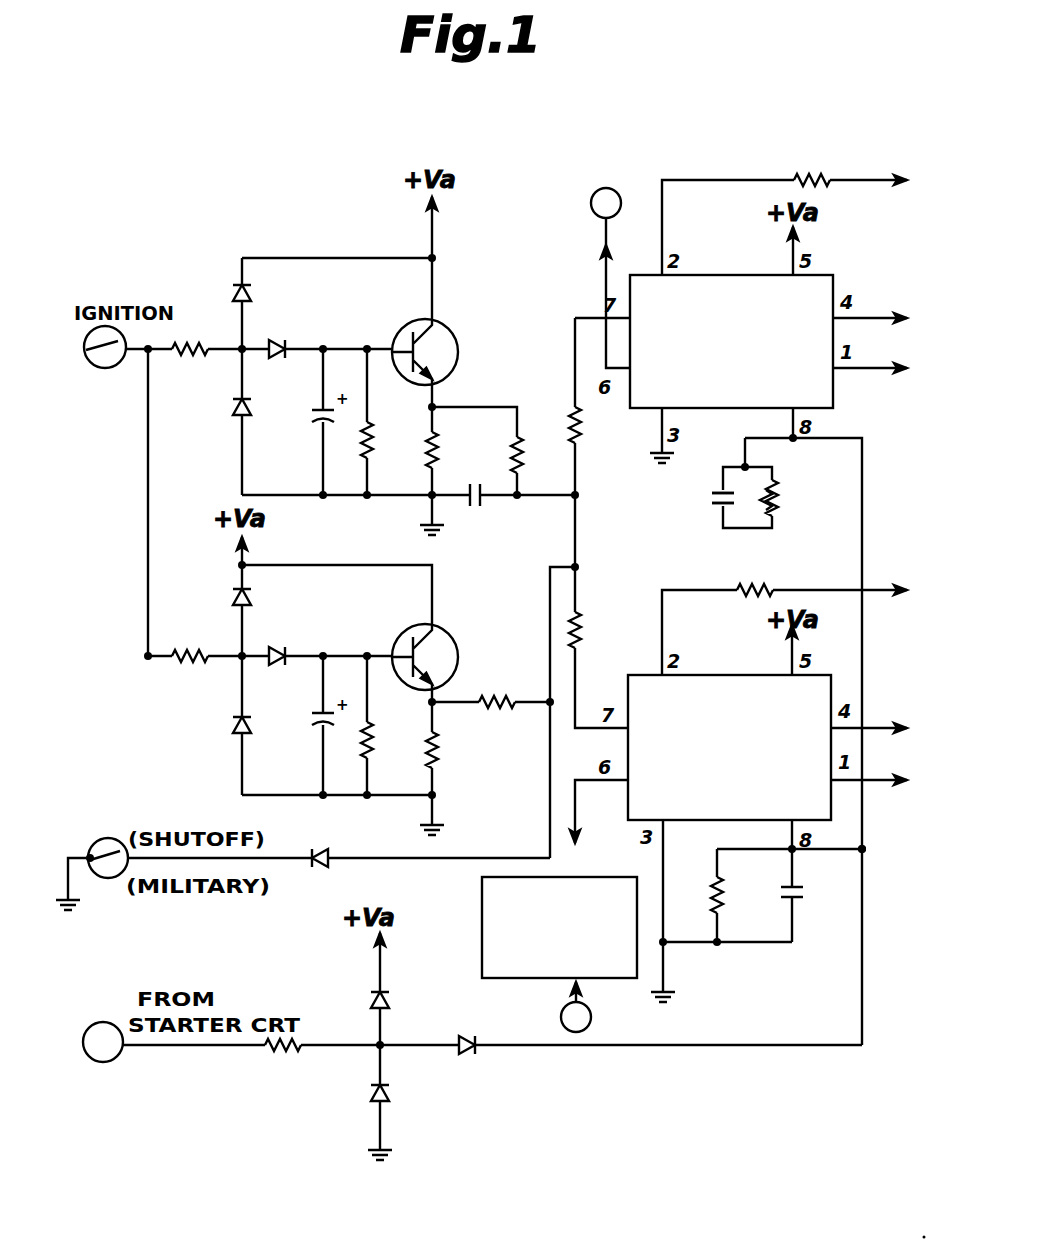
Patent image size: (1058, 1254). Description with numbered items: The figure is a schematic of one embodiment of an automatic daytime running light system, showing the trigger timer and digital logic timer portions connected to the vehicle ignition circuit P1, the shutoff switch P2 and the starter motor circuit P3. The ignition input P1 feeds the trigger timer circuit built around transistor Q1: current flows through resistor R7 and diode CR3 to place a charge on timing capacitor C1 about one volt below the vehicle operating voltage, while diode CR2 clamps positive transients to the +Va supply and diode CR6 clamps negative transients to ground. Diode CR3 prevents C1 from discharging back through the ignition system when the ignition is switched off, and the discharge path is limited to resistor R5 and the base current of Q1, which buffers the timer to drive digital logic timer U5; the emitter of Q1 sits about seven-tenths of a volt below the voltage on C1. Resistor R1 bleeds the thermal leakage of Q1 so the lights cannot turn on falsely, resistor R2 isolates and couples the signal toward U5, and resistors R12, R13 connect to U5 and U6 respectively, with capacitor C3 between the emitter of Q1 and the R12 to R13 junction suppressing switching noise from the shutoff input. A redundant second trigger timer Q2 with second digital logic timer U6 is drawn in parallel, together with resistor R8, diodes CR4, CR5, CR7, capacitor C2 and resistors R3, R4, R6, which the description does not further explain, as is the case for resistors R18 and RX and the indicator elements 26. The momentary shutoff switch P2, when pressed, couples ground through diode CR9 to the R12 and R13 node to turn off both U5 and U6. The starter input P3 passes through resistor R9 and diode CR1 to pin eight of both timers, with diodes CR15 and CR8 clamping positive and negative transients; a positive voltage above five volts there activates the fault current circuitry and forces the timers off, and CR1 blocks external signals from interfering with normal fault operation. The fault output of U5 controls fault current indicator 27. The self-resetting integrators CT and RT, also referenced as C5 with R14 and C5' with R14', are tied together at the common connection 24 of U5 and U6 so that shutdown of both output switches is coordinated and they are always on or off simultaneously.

The ignition circuit input P1 is at (88, 347).
The manual switch means P2 is at (92, 853).
The starter motor circuit input P3 is at (86, 1037).
The resistor R7 is at (206, 356).
The resistor R8 is at (204, 654).
The resistor R9 is at (274, 1054).
The diode CR2 is at (252, 293).
The diode CR3 is at (320, 322).
The diode CR6 is at (230, 407).
The diode CR4 is at (232, 594).
The diode CR5 is at (284, 648).
The diode CR7 is at (230, 724).
The diode CR9 is at (326, 866).
The diode CR15 is at (388, 999).
The diode CR8 is at (372, 1099).
The diode CR1 is at (477, 1054).
The timing capacitor C1 is at (317, 423).
The capacitor C2 is at (316, 714).
The capacitor C3 is at (480, 504).
The integrator capacitor C5 is at (808, 911).
The integrator capacitor C5' is at (685, 517).
The integrator capacitor CT is at (710, 495).
The integrator resistor RT is at (778, 512).
The bleeder resistor R1 is at (440, 452).
The isolating coupler resistor R2 is at (524, 442).
The resistor R3 is at (439, 756).
The resistor R4 is at (516, 674).
The resistor R5 is at (374, 445).
The resistor R6 is at (384, 730).
The resistor R12 is at (582, 428).
The resistor R13 is at (582, 632).
The integrator resistor R14 is at (701, 869).
The integrator resistor R14' is at (803, 486).
The resistor R18 is at (756, 588).
The resistor RX is at (826, 162).
The trigger timer circuit transistor Q1 is at (438, 331).
The second trigger timer circuit transistor Q2 is at (437, 636).
The digital logic timer U5 is at (727, 275).
The second digital logic timer U6 is at (725, 675).
The common connection 24 is at (902, 838).
The fault current indicator lamp 26 is at (610, 190).
The fault current indicator means 27 is at (480, 928).